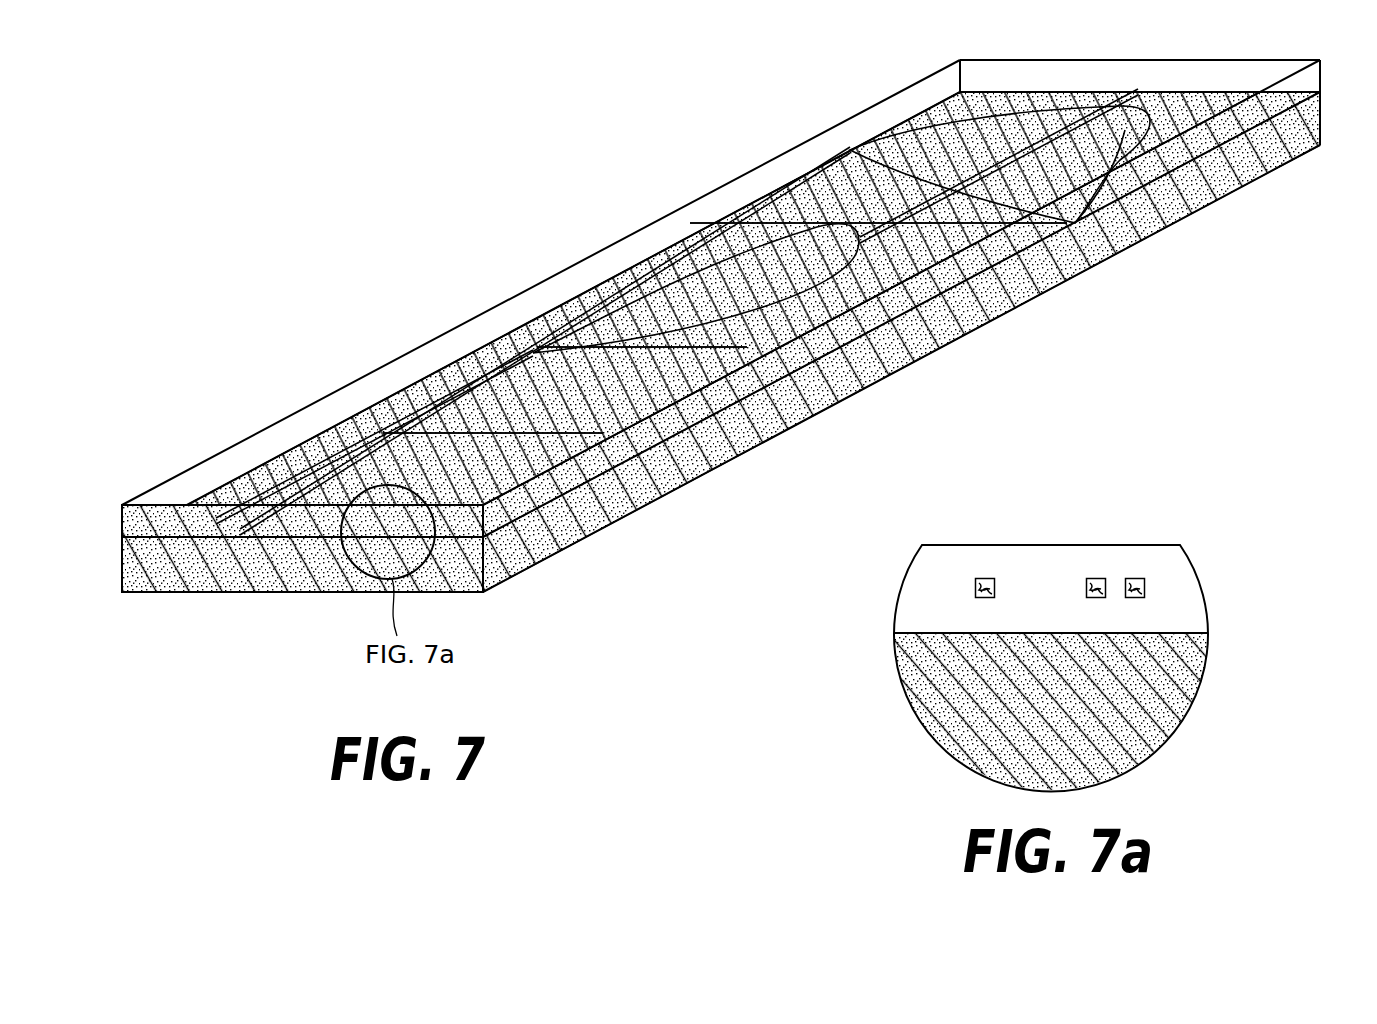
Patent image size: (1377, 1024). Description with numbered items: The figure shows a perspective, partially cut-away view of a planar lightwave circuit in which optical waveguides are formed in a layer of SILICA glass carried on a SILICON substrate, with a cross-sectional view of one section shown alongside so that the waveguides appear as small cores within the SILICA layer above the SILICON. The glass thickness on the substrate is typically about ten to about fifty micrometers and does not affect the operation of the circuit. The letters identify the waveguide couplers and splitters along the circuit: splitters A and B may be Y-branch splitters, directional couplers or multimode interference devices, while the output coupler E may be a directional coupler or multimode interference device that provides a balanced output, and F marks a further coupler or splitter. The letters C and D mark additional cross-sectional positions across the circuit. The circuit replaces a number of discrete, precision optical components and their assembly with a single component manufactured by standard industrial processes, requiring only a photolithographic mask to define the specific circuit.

In FIG. 7, the splitter A is at (537, 347).
In FIG. 7, the splitter B is at (747, 347).
In FIG. 7, the section line C is at (866, 227).
In FIG. 7, the section line D is at (1067, 223).
In FIG. 7, the output coupler E is at (383, 433).
In FIG. 7, the waveguide coupler F is at (603, 433).
In FIG. 7, the silica layer SILICA is at (590, 274).
In FIG. 7A, the silica layer SILICA is at (1173, 585).
In FIG. 7, the silicon substrate SILICON is at (968, 318).
In FIG. 7A, the silicon substrate SILICON is at (1173, 699).